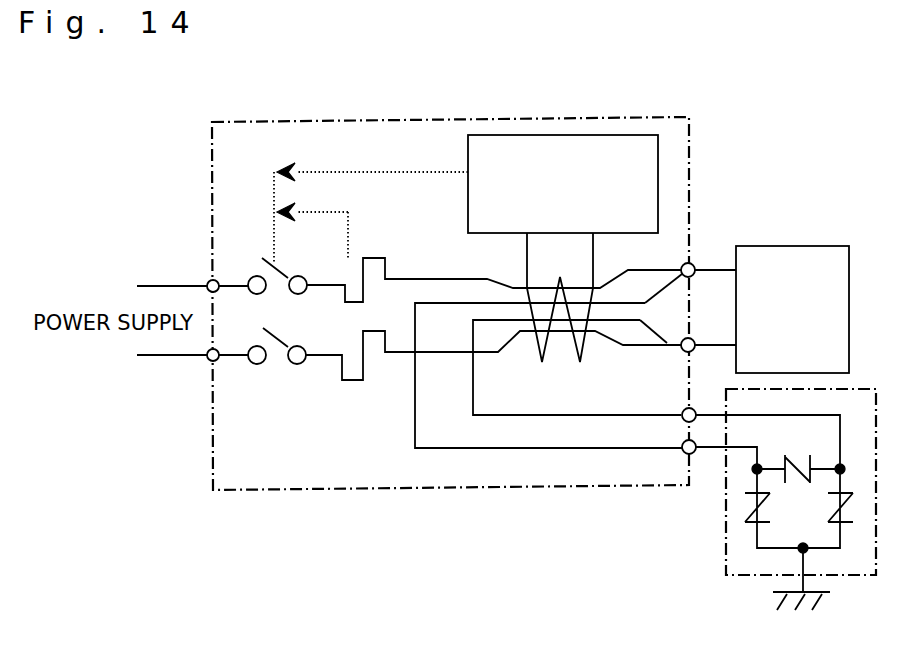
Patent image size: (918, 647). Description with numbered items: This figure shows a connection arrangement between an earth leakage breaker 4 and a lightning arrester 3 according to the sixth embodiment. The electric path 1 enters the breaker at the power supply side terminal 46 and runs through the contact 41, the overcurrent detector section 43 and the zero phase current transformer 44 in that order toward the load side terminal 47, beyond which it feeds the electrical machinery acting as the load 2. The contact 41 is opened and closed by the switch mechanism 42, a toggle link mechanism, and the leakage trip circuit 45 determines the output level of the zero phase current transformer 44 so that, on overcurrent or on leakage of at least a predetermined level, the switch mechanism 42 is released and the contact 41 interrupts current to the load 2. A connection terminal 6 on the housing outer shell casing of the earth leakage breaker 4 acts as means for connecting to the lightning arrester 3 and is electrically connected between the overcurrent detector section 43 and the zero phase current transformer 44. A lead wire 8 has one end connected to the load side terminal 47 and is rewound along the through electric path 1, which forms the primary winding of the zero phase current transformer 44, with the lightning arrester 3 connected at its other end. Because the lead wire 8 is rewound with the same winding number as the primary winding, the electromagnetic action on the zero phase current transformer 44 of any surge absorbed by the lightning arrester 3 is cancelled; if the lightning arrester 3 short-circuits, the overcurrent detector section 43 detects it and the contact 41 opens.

The electric path 1 is at (436, 280).
The electrical machinery 2 is at (802, 246).
The lightning arrester 3 is at (726, 538).
The earth leakage breaker 4 is at (300, 118).
The connection terminal 6 is at (682, 449).
The lead wire 8 is at (632, 320).
The contact 41 is at (282, 350).
The switch mechanism 42 is at (272, 227).
The overcurrent detector section 43 is at (342, 365).
The zero phase current transformer 44 is at (573, 350).
The leakage trip circuit 45 is at (555, 135).
The power supply side terminal 46 is at (207, 285).
The load side terminal 47 is at (690, 264).